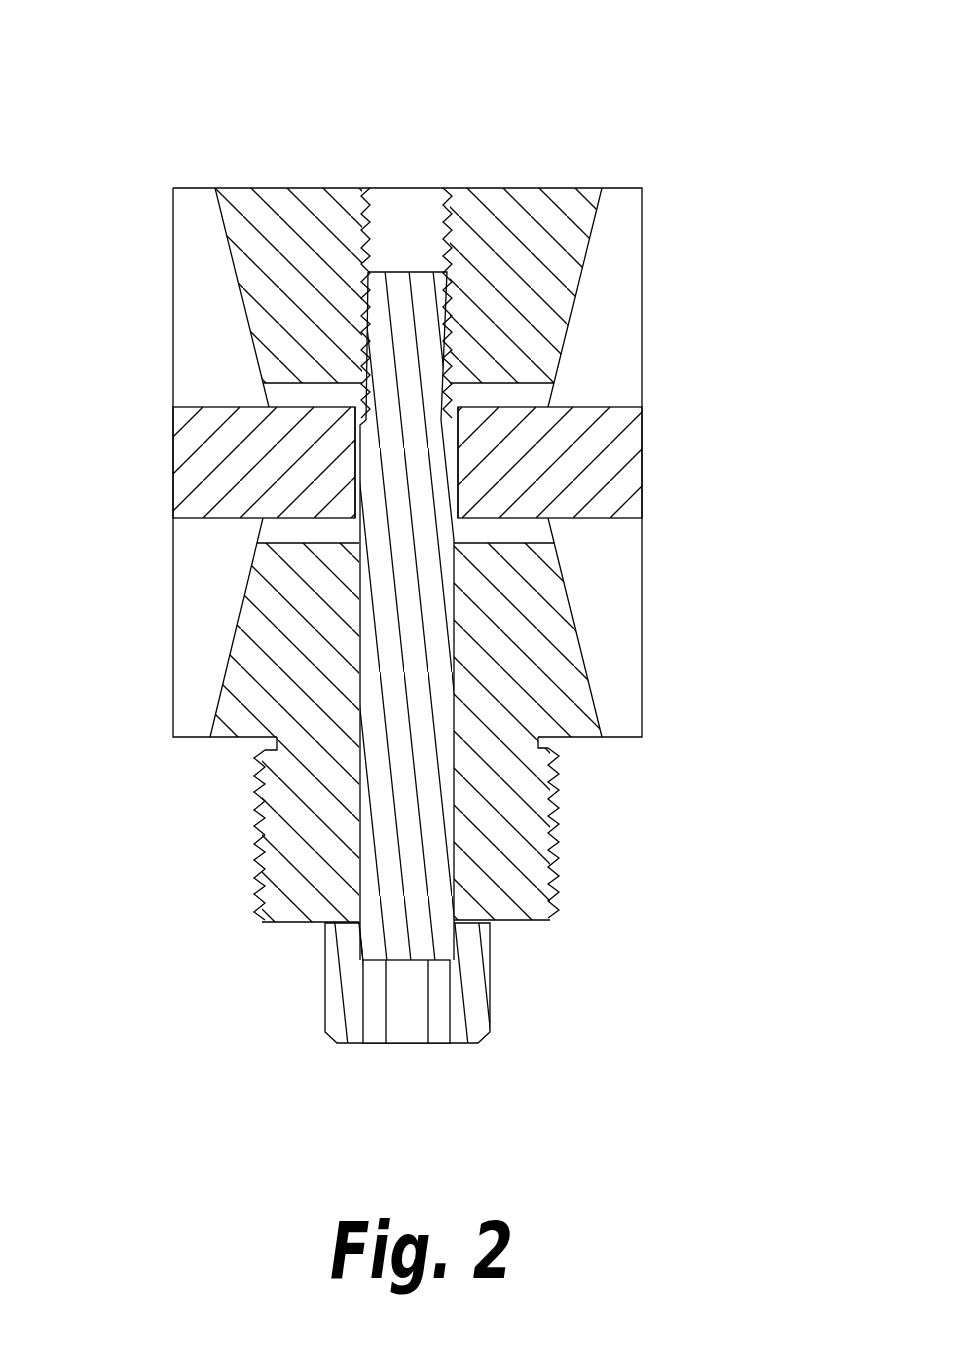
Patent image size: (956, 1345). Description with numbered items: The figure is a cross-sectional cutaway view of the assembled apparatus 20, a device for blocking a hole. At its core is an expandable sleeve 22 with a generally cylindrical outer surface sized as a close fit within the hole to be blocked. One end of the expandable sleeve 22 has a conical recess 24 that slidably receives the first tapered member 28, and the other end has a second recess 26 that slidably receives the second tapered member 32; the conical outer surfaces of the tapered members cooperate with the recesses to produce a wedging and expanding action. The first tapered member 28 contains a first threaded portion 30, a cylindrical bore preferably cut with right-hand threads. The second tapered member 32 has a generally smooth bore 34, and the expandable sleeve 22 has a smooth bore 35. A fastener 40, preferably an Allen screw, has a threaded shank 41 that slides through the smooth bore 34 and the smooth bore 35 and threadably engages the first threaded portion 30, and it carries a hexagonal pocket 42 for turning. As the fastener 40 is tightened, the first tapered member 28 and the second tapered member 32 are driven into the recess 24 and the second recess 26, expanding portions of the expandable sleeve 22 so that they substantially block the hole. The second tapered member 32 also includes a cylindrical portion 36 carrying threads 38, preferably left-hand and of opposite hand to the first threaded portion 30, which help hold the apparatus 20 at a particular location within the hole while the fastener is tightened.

The apparatus 20 is at (643, 128).
The expandable sleeve 22 is at (642, 449).
The recess 24 is at (588, 324).
The second recess 26 is at (258, 617).
The first tapered member 28 is at (274, 228).
The first threaded portion 30 is at (425, 215).
The second tapered member 32 is at (268, 673).
The smooth bore 34 is at (555, 838).
The smooth bore 35 is at (356, 463).
The cylindrical portion 36 is at (297, 798).
The threads 38 is at (256, 850).
The fastener 40 is at (490, 963).
The threaded shank 41 is at (402, 302).
The hexagonal pocket 42 is at (366, 1006).